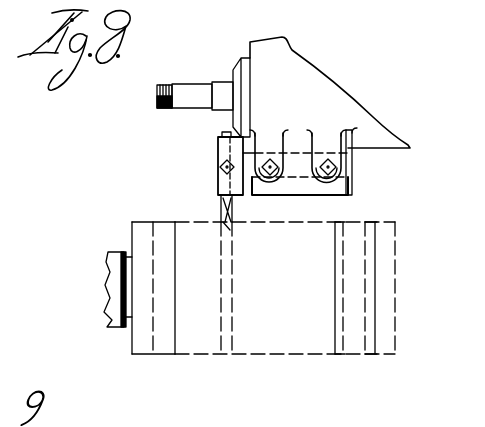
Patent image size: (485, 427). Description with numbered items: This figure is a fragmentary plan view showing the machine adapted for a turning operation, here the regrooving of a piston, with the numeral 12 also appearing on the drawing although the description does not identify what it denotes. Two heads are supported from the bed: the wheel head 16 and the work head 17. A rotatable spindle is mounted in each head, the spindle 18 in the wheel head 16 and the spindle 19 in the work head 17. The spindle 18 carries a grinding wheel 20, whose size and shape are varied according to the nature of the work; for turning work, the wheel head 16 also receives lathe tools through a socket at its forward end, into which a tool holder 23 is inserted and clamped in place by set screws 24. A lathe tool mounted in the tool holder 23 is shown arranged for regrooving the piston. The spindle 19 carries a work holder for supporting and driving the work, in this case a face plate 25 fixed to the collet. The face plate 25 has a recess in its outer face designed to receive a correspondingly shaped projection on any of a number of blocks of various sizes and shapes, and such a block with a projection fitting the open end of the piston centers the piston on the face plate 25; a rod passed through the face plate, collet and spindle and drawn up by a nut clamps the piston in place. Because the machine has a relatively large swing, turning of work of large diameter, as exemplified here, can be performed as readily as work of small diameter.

The cylinder 12 is at (313, 391).
The wheel head 16 is at (321, 92).
The work head 17 is at (197, 310).
The spindle 18 is at (195, 76).
The spindle 19 is at (106, 318).
The grinding wheel 20 is at (319, 169).
The tool holder 23 is at (193, 243).
The set screws 24 is at (295, 136).
The face plate 25 is at (141, 317).